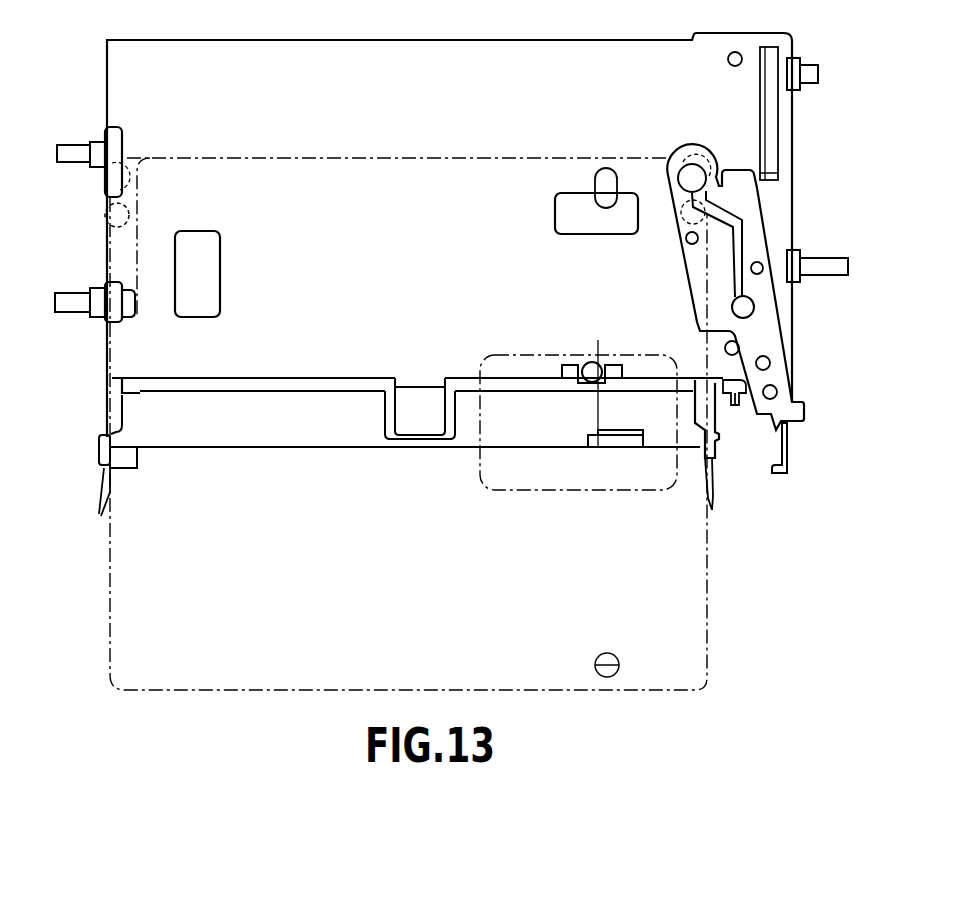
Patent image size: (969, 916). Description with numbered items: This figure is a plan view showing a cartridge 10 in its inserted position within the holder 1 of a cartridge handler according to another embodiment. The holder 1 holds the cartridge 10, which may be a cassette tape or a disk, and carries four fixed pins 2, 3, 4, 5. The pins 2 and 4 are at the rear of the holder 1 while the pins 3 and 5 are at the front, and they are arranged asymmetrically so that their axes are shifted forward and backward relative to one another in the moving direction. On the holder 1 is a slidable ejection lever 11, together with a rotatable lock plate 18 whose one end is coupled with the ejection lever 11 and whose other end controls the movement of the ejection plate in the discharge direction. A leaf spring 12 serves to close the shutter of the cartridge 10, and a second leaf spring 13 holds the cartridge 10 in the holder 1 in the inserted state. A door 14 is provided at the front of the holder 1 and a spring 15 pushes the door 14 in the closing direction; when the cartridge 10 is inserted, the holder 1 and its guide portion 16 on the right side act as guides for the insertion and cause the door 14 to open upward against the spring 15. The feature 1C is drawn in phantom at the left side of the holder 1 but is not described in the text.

The holder 1 is at (125, 57).
The hole in base plate 1C is at (122, 223).
The pin 2 is at (58, 150).
The pin 3 is at (56, 300).
The pin 4 is at (818, 75).
The pin 5 is at (813, 262).
The cartridge 10 is at (125, 634).
The ejection lever 11 is at (788, 457).
The leaf spring 12 is at (713, 450).
The leaf spring 13 is at (100, 442).
The door 14 is at (212, 438).
The spring 15 is at (608, 447).
The guide portion 16 is at (712, 503).
The lock plate 18 is at (768, 338).